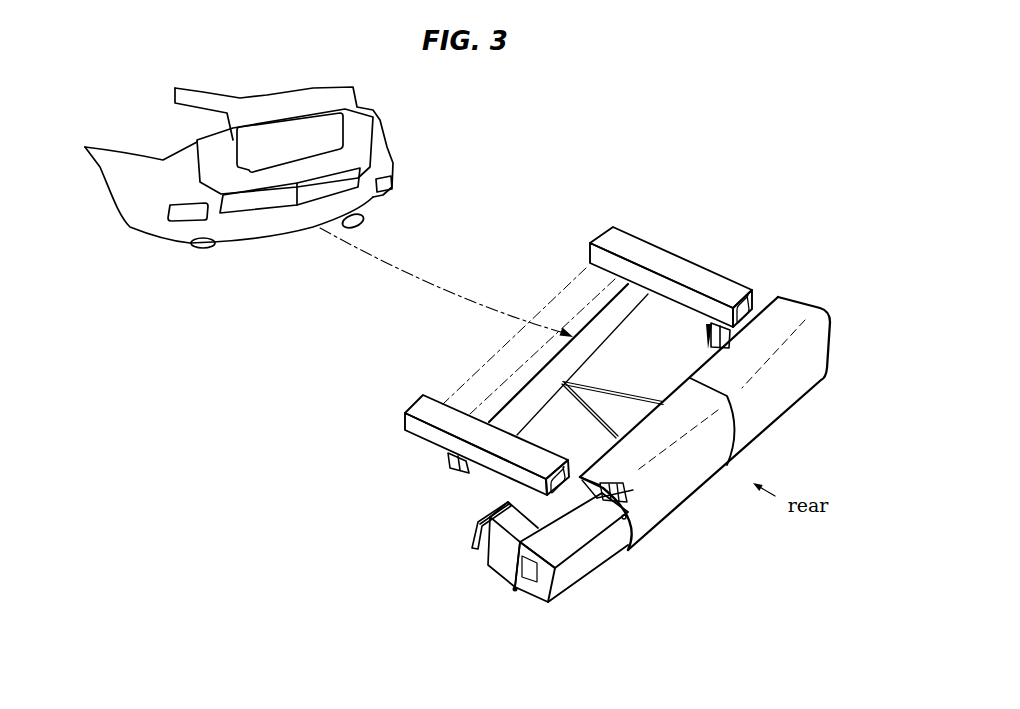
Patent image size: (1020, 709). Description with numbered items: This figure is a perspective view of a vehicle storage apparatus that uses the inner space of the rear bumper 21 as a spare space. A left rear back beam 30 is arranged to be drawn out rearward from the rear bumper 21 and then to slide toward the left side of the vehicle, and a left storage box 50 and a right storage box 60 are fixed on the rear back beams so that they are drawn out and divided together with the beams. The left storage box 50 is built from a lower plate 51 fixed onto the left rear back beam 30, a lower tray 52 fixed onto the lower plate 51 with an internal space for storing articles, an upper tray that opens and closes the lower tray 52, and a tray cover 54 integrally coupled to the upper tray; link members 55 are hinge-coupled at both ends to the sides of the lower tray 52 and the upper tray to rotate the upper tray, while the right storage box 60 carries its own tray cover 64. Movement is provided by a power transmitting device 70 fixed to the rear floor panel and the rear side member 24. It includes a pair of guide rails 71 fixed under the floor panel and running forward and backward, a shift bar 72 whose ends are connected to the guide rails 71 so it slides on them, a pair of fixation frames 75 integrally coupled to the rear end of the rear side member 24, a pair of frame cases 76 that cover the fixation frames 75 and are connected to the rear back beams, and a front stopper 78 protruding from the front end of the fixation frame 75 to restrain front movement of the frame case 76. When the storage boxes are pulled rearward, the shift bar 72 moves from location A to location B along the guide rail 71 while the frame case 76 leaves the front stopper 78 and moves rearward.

The rear bumper 21 is at (248, 228).
The left storage box 50 is at (281, 205).
The right storage box 60 is at (624, 377).
The tray cover 64 is at (800, 378).
The tray cover 54 is at (683, 490).
The power transmitting device 70 is at (529, 321).
The guide rails 71 is at (638, 243).
The shift bar 72 is at (597, 322).
The rear side member 24 is at (700, 322).
The fixation frames 75 is at (741, 326).
The frame cases 76 is at (760, 302).
The front stopper 78 is at (473, 546).
The left rear back beam 30 is at (561, 582).
The lower plate 51 is at (570, 494).
The lower tray 52 is at (633, 507).
The link members 55 is at (601, 490).
The location A is at (472, 388).
The location B is at (657, 337).